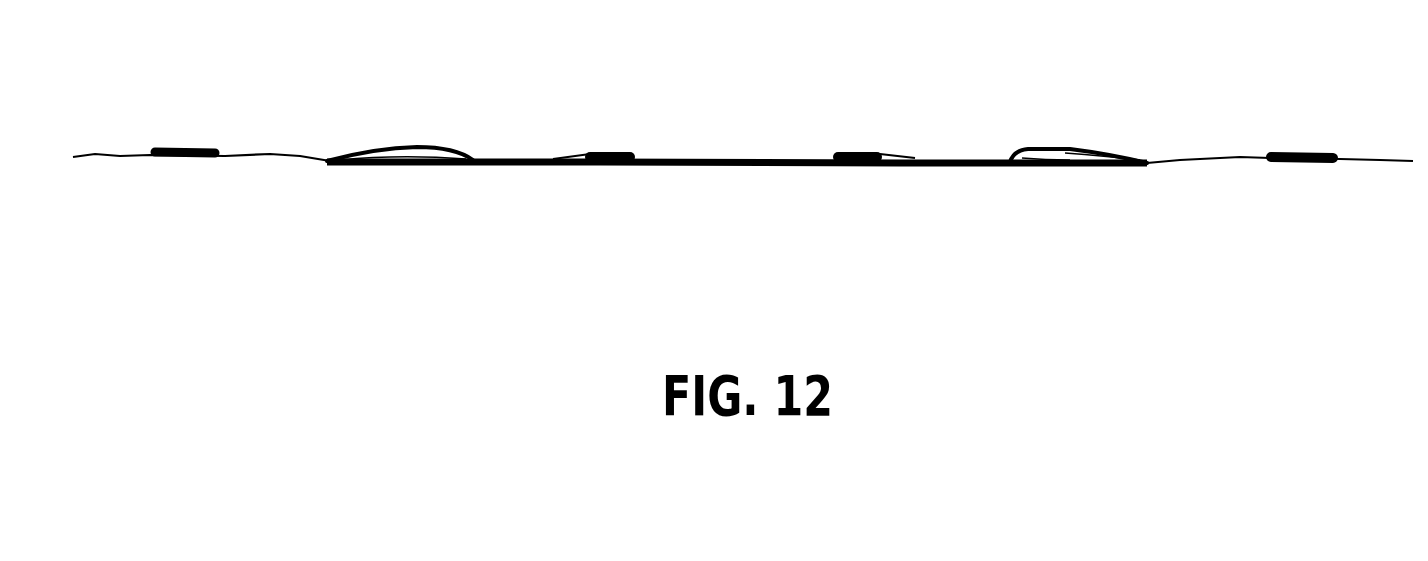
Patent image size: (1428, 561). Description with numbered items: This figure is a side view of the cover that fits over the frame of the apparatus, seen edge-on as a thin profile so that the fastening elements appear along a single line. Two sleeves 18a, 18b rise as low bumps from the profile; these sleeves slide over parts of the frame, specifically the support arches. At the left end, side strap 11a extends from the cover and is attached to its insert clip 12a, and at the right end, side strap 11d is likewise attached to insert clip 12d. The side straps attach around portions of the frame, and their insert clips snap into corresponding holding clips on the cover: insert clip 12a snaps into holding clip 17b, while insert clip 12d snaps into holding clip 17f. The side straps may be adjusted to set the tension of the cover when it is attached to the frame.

The side strap 11a is at (141, 150).
The insert clip 12a is at (185, 150).
The sleeve 18b is at (387, 150).
The holding clip 17b is at (610, 150).
The holding clip 17f is at (862, 150).
The sleeve 18a is at (1080, 150).
The insert clip 12d is at (1313, 150).
The side strap 11d is at (1357, 150).